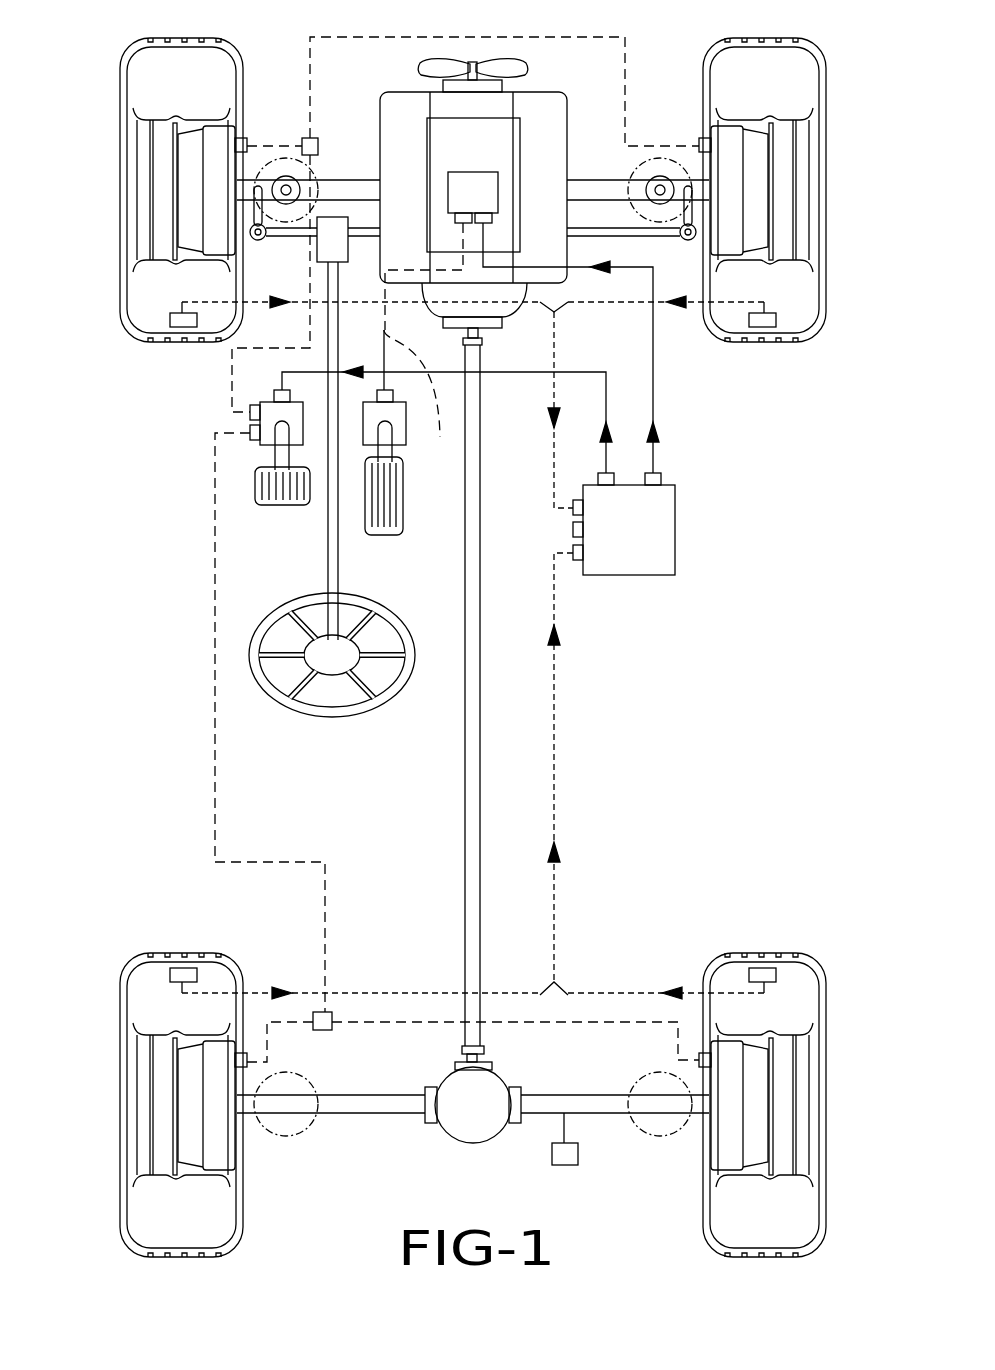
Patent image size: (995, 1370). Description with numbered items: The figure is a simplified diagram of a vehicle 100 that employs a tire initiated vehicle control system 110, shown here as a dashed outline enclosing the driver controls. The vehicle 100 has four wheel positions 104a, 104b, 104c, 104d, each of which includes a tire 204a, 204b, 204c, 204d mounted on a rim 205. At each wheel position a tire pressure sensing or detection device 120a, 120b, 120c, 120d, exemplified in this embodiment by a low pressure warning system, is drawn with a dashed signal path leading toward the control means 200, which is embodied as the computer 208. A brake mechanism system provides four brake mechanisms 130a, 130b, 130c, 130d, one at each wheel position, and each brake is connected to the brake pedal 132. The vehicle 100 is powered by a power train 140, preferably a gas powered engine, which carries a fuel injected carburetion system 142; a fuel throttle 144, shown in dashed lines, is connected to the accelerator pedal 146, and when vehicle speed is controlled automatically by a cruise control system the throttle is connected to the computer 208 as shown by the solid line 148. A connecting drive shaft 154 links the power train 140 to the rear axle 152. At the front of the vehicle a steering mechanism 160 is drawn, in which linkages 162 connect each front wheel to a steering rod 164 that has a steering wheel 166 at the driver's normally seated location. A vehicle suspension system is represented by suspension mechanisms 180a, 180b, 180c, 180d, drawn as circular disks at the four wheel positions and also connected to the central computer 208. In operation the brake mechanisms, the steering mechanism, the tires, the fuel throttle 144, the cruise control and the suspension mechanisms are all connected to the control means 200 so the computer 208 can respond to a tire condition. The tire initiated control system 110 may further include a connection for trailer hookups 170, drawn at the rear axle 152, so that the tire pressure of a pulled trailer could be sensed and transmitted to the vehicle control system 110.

The vehicle 100 is at (375, 549).
The wheel position 104a is at (160, 173).
The wheel position 104b is at (775, 173).
The wheel position 104c is at (181, 1097).
The wheel position 104d is at (760, 1097).
The tire initiated vehicle control system 110 is at (270, 555).
The tire pressure sensing or detection device 120a is at (178, 322).
The tire pressure sensing or detection device 120b is at (768, 322).
The tire pressure sensing or detection device 120c is at (187, 975).
The tire pressure sensing or detection device 120d is at (759, 975).
The brake mechanism 130a is at (195, 207).
The brake mechanism 130b is at (751, 207).
The brake mechanism 130c is at (195, 1093).
The brake mechanism 130d is at (751, 1093).
The brake pedal 132 is at (267, 483).
The power train 140 is at (472, 173).
The fuel injected carburetion system 142 is at (438, 112).
The fuel throttle 144 is at (447, 348).
The accelerator pedal 146 is at (393, 510).
The solid line 148 is at (653, 388).
The rear axle 152 is at (374, 1113).
The connecting drive shaft 154 is at (465, 845).
The steering mechanism 160 is at (262, 689).
The linkages 162 is at (292, 232).
The steering rod 164 is at (328, 553).
The steering wheel 166 is at (333, 712).
The trailer hookups 170 is at (566, 1160).
The suspension mechanism 180a is at (320, 188).
The suspension mechanism 180b is at (628, 188).
The suspension mechanism 180c is at (289, 1137).
The suspension mechanism 180d is at (657, 1137).
The control means 200 is at (662, 577).
The tire 204a is at (120, 68).
The tire 204b is at (826, 68).
The tire 204c is at (120, 1225).
The tire 204d is at (826, 1225).
The rim 205 is at (165, 203).
The computer 208 is at (655, 575).